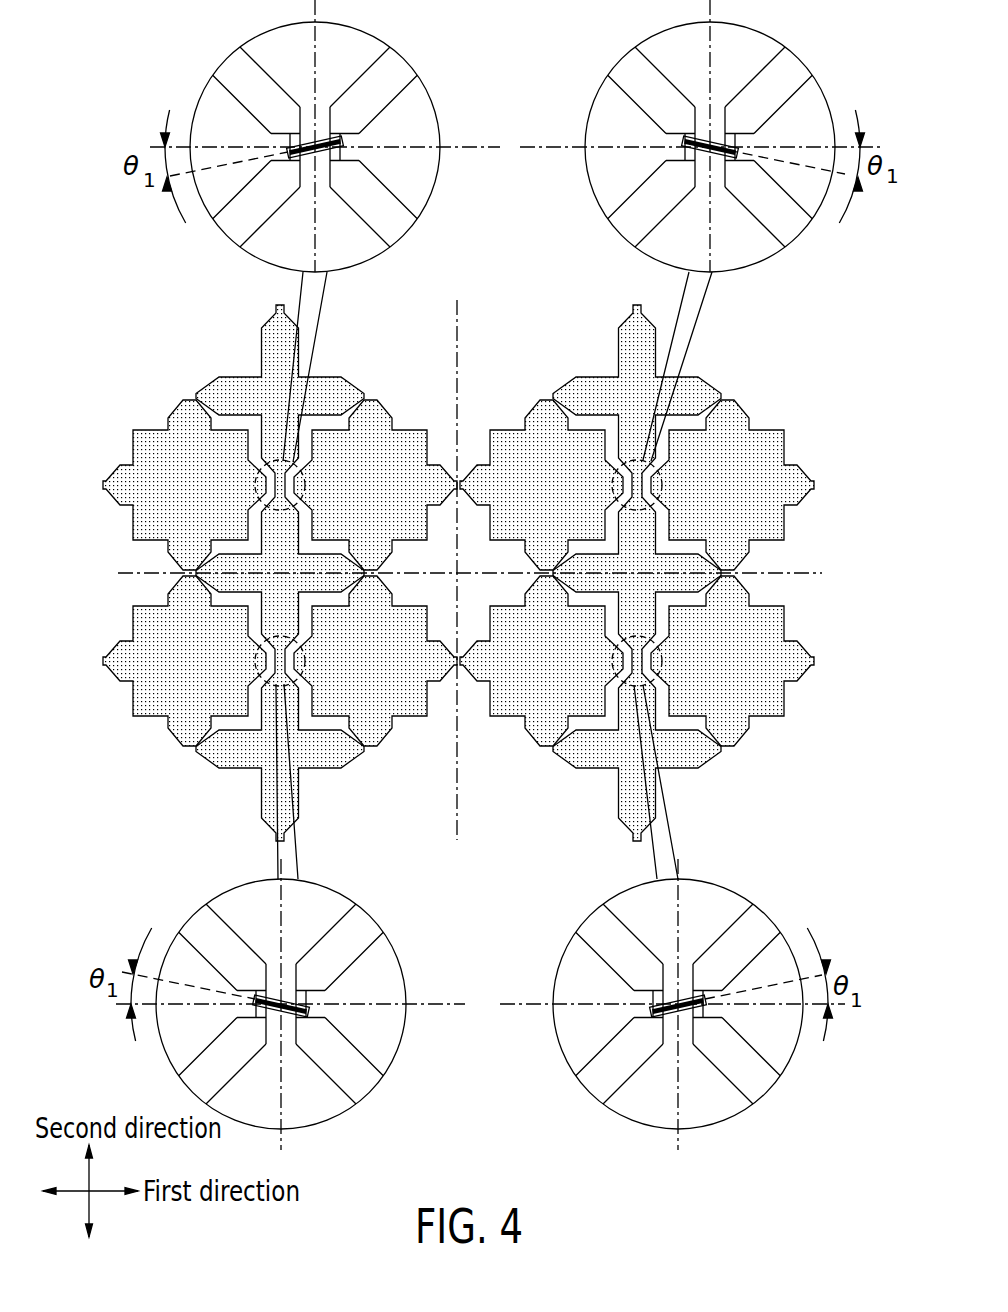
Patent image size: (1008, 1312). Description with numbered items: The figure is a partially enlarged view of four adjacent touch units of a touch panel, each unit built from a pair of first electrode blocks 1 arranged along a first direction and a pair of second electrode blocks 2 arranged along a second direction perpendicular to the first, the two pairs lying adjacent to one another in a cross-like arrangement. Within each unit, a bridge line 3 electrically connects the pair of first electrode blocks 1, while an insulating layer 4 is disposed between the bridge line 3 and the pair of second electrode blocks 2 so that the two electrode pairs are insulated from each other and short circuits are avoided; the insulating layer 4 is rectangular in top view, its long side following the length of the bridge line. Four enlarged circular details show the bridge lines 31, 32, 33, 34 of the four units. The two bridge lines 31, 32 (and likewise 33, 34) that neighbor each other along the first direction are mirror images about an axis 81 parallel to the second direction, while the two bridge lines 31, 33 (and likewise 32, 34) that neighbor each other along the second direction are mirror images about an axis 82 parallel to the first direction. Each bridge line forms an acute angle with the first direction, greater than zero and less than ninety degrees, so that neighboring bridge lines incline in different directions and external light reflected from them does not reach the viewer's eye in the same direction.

The first electrode block 1 is at (143, 447).
The second electrode block 2 is at (267, 352).
The bridge line 3 is at (278, 492).
The insulating layer 4 is at (340, 150).
The bridge line 31 is at (341, 143).
The bridge line 32 is at (682, 140).
The bridge line 33 is at (303, 1012).
The bridge line 34 is at (653, 1012).
The axis 81 is at (457, 353).
The axis 82 is at (810, 574).